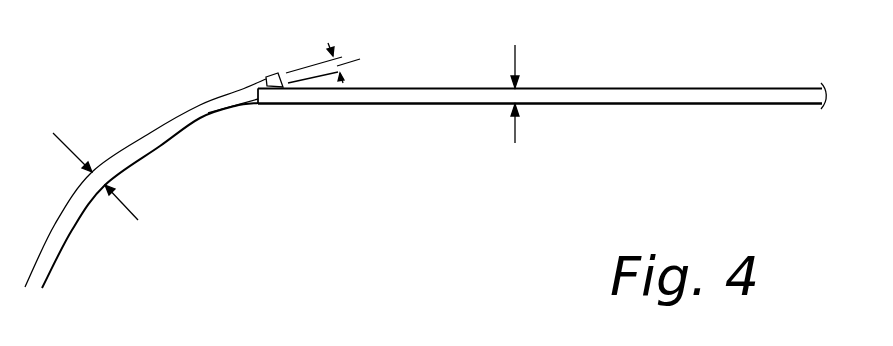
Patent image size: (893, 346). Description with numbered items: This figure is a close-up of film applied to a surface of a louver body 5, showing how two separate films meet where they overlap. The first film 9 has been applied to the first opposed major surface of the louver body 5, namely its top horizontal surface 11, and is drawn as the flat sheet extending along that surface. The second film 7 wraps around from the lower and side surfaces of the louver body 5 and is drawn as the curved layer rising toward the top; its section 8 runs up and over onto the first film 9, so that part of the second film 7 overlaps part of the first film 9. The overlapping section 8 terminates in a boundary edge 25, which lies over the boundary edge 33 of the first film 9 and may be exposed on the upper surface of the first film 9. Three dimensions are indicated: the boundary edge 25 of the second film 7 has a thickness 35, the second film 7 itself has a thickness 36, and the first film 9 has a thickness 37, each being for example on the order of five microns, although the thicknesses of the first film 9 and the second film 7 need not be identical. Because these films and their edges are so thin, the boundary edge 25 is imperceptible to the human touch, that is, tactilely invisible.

The louver body 5 is at (402, 222).
The second film 7 is at (52, 247).
The portion of second film 8 is at (165, 118).
The first film 9 is at (705, 88).
The top horizontal surface 11 is at (699, 103).
The boundary edge 25 is at (270, 78).
The boundary edge 33 is at (259, 92).
The thickness 35 is at (345, 63).
The thickness 36 is at (131, 212).
The thickness 37 is at (513, 132).